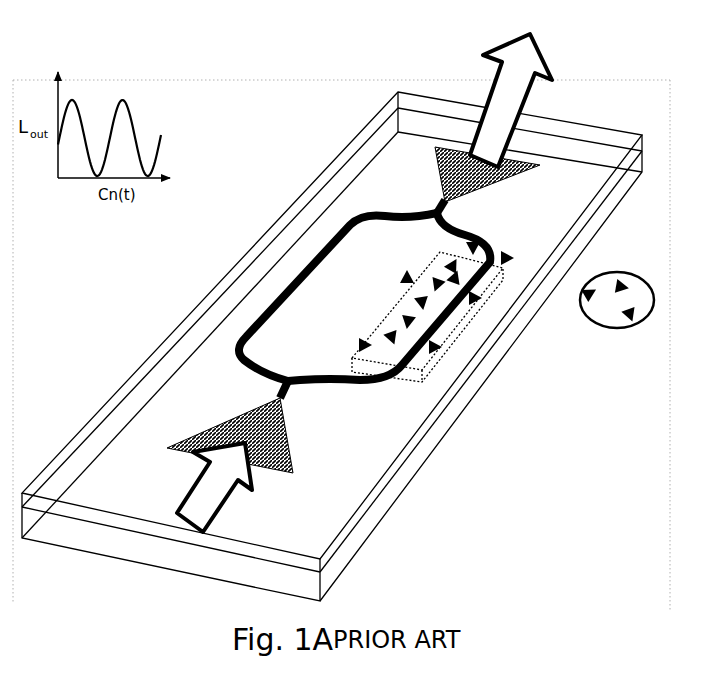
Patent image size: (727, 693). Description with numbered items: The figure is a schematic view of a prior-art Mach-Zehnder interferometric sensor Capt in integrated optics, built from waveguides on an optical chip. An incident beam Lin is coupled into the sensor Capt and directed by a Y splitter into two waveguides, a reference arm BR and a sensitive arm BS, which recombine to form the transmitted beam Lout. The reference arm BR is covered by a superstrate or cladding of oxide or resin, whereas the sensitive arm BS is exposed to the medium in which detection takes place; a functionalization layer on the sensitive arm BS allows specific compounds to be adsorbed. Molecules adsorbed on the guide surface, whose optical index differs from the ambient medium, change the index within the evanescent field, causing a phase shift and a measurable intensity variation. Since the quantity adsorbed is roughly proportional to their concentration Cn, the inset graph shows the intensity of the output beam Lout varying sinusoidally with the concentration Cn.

The reference arm BR is at (302, 263).
The sensitive arm BS is at (445, 321).
The concentration of molecules Cn is at (645, 283).
The interferometric sensor Capt is at (155, 338).
The incident beam Lin is at (196, 487).
The transmitted beam Lout is at (490, 100).